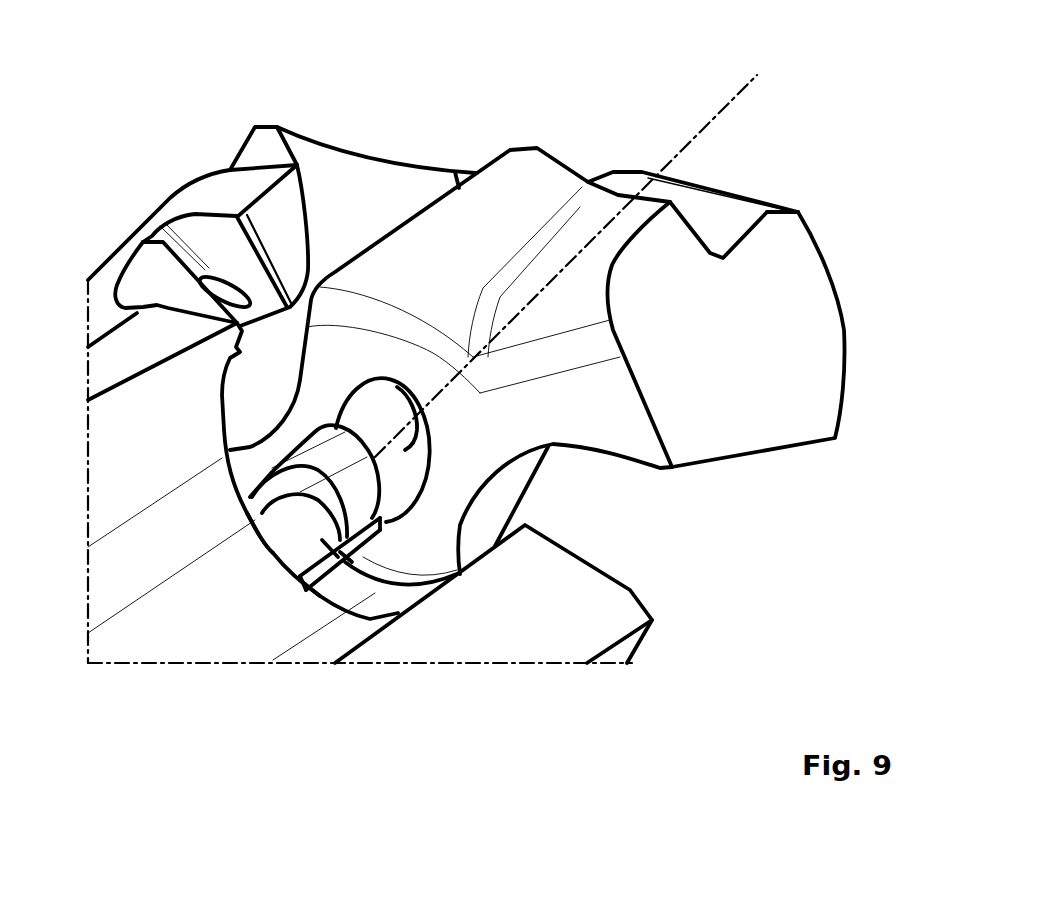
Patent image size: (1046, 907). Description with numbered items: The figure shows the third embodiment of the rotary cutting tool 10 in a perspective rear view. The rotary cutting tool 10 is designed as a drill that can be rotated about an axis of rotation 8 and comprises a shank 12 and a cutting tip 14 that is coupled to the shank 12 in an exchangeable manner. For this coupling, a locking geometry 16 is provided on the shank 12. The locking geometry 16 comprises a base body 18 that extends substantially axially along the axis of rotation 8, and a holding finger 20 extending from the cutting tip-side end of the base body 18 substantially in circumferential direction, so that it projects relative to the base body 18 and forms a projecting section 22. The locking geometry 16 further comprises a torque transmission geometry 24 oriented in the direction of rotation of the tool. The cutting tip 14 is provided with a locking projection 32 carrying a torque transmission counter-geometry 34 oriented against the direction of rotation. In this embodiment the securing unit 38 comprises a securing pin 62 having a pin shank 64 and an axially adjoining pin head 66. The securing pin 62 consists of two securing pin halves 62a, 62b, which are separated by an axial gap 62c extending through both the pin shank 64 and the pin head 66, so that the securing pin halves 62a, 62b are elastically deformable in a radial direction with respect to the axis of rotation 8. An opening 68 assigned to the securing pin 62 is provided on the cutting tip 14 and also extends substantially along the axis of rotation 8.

The axis of rotation 8 is at (724, 108).
The rotary cutting tool 10 is at (818, 87).
The shank 12 is at (547, 643).
The cutting tip 14 is at (812, 282).
The locking geometry 16 is at (117, 233).
The base body 18 is at (113, 267).
The holding finger 20 is at (198, 197).
The projecting section 22 is at (267, 178).
The torque transmission geometry 24 is at (138, 302).
The locking projection 32 is at (673, 233).
The torque transmission counter-geometry 34 is at (612, 203).
The securing unit 38 is at (401, 571).
The securing pin 62 is at (373, 553).
The securing pin half 62a is at (273, 553).
The securing pin half 62b is at (317, 590).
The axial gap 62c is at (340, 552).
The pin shank 64 is at (287, 517).
The pin head 66 is at (313, 450).
The opening 68 is at (410, 474).